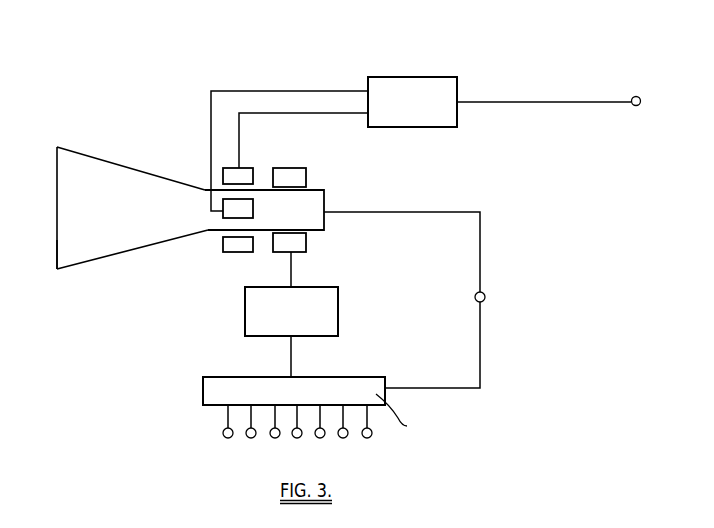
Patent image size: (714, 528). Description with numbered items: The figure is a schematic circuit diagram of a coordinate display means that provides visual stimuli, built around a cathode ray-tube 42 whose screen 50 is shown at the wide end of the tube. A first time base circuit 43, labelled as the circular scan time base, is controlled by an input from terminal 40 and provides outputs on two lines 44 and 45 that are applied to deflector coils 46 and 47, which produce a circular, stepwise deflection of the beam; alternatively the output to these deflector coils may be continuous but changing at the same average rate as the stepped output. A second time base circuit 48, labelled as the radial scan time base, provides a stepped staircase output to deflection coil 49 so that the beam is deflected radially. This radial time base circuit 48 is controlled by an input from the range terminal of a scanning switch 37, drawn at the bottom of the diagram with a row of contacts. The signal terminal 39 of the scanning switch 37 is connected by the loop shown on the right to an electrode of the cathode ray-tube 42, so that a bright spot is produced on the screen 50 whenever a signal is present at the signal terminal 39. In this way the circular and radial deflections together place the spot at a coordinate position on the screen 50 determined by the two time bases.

The scanning switch 37 is at (339, 411).
The signal terminal 39 is at (486, 295).
The terminal 40 is at (632, 96).
The cathode ray-tube 42 is at (132, 208).
The time base circuit 43 is at (430, 79).
The line 44 is at (278, 90).
The line 45 is at (295, 114).
The deflector coil 46 is at (233, 211).
The deflector coil 47 is at (246, 173).
The time base circuit 48 is at (341, 314).
The deflection coil 49 is at (307, 245).
The screen 50 is at (55, 250).